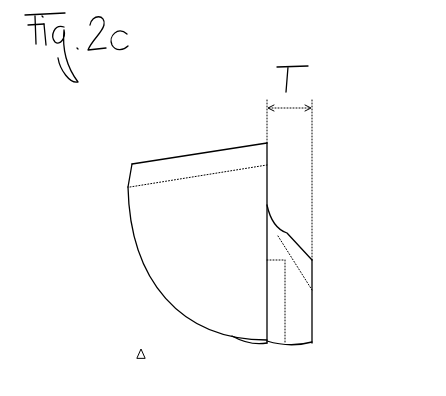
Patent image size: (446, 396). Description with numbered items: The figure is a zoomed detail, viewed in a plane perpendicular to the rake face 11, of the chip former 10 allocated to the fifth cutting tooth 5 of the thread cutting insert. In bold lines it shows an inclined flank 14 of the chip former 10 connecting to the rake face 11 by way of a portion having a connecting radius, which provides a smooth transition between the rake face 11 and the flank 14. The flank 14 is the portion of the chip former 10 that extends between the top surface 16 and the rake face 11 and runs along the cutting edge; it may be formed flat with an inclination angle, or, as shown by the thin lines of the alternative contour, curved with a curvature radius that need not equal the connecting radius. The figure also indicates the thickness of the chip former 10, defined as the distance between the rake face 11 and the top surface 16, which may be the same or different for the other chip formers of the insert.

The fifth cutting tooth 5 is at (242, 158).
The rake face 11 is at (267, 173).
The flank 14 is at (287, 233).
The top surface 16 is at (312, 290).
The chip former 10 is at (297, 295).